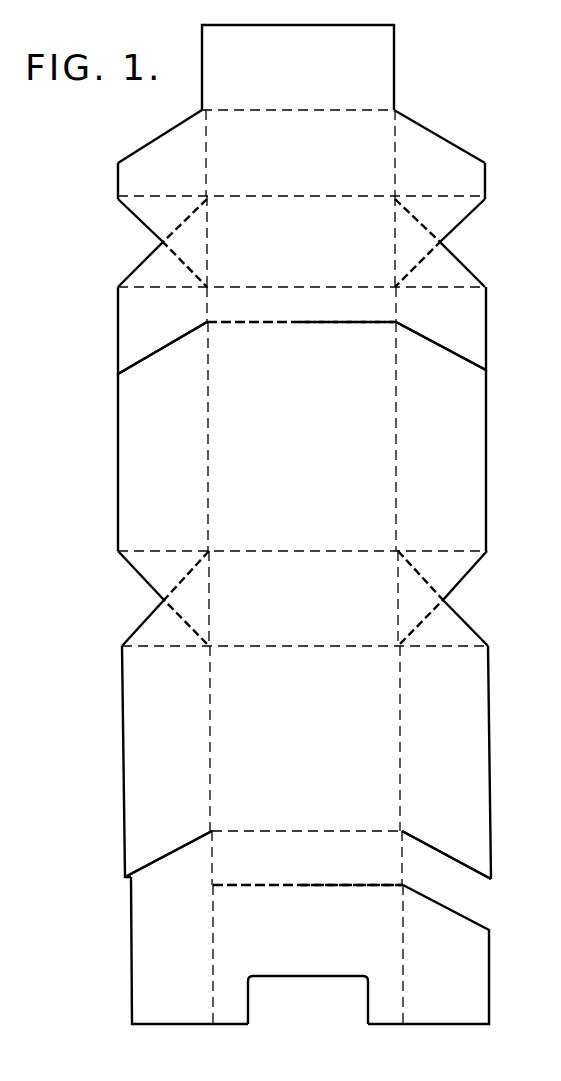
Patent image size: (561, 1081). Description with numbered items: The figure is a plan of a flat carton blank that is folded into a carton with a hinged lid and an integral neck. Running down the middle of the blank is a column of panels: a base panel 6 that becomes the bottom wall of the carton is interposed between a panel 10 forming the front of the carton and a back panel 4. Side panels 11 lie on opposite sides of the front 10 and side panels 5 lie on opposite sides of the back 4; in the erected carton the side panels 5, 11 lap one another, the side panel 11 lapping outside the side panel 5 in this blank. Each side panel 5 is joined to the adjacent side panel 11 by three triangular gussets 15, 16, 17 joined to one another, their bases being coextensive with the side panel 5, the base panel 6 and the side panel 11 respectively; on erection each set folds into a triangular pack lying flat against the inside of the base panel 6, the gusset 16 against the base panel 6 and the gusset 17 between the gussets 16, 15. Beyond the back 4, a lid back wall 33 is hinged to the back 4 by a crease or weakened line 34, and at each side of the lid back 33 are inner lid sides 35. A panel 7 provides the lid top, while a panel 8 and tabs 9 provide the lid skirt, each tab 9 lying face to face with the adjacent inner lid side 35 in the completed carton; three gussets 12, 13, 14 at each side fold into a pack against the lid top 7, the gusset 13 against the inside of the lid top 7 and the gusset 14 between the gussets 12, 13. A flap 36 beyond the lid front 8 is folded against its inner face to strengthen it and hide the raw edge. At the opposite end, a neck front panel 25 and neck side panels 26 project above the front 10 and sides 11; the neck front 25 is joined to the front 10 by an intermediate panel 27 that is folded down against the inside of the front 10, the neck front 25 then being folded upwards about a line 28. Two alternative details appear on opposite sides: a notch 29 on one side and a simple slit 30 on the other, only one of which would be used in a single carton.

The back panel 4 is at (312, 435).
The side panel 5 is at (175, 452).
The base panel 6 is at (317, 611).
The lid top panel 7 is at (316, 267).
The lid front panel 8 is at (311, 167).
The outer lid side tab 9 is at (167, 153).
The front panel 10 is at (326, 751).
The side panel 11 is at (179, 757).
The lid gusset 12 is at (165, 276).
The lid gusset 13 is at (186, 243).
The lid gusset 14 is at (175, 208).
The triangular gusset 15 is at (178, 560).
The triangular gusset 16 is at (195, 608).
The triangular gusset 17 is at (165, 634).
The neck front panel 25 is at (325, 954).
The neck side panel 26 is at (186, 962).
The intermediate panel 27 is at (328, 870).
The fold line 28 is at (365, 887).
The notch 29 is at (447, 881).
The slit 30 is at (175, 853).
The lid back wall 33 is at (321, 317).
The weakened line 34 is at (362, 323).
The inner lid side 35 is at (133, 323).
The flap 36 is at (306, 79).